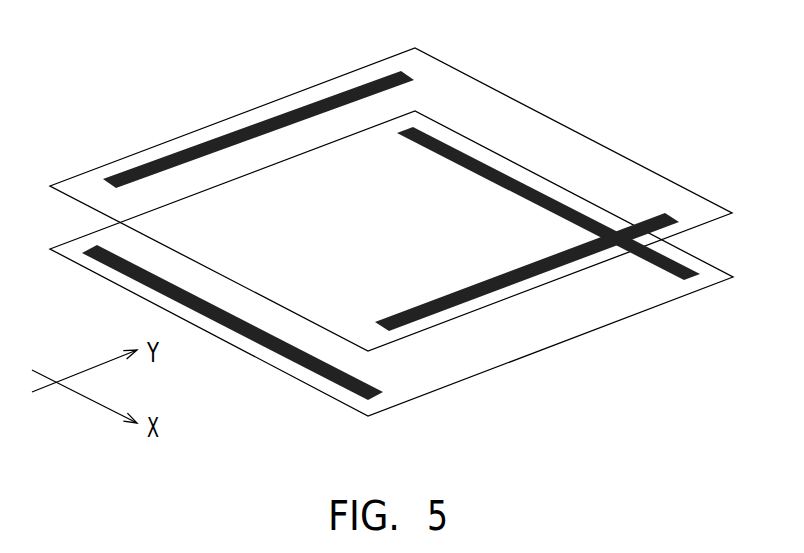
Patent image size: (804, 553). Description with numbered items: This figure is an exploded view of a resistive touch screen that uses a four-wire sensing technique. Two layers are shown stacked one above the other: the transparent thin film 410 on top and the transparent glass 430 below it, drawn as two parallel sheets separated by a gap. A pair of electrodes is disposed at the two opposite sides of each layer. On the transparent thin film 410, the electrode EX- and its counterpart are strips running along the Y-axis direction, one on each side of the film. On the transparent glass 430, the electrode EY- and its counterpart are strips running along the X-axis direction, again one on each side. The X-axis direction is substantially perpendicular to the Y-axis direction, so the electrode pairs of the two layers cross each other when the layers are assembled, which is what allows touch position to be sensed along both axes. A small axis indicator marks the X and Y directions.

The transparent thin film 410 is at (692, 194).
The transparent glass 430 is at (703, 262).
The electrode EX− EX- is at (402, 77).
The electrode EY− EY- is at (368, 398).